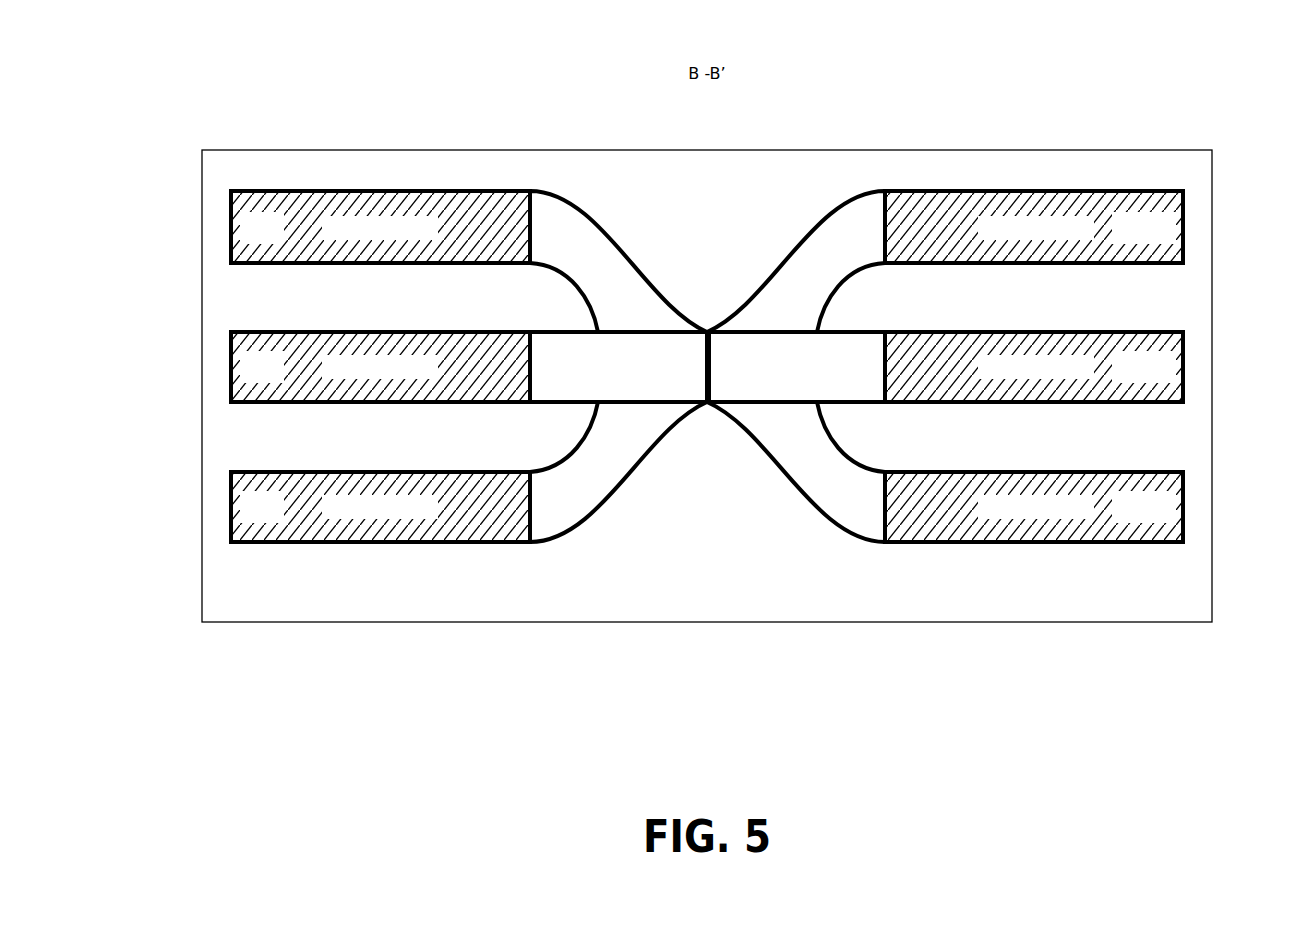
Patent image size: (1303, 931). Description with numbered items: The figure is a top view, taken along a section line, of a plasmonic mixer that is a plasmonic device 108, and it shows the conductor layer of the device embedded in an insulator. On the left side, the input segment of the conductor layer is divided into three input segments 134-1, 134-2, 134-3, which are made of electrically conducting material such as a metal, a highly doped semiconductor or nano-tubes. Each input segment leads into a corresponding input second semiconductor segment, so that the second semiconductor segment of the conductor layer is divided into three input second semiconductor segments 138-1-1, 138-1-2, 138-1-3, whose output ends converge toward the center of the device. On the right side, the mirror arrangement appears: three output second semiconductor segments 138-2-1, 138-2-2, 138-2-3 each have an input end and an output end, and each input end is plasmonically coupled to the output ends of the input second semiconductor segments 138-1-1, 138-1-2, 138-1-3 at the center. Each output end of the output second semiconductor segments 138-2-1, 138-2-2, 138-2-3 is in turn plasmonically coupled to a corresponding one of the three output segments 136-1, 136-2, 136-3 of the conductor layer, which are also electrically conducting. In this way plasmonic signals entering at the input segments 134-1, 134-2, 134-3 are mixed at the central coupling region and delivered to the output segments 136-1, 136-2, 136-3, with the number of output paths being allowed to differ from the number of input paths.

The plasmonic device 108 is at (184, 78).
The input segment 134-1 is at (232, 228).
The input segment 134-2 is at (232, 367).
The input segment 134-3 is at (232, 507).
The output segment 136-1 is at (1183, 228).
The output segment 136-2 is at (1183, 367).
The output segment 136-3 is at (1183, 507).
The input second semiconductor segment 138-1-1 is at (571, 222).
The input second semiconductor segment 138-1-2 is at (655, 342).
The input second semiconductor segment 138-1-3 is at (575, 512).
The output second semiconductor segment 138-2-1 is at (843, 222).
The output second semiconductor segment 138-2-2 is at (772, 385).
The output second semiconductor segment 138-2-3 is at (830, 512).